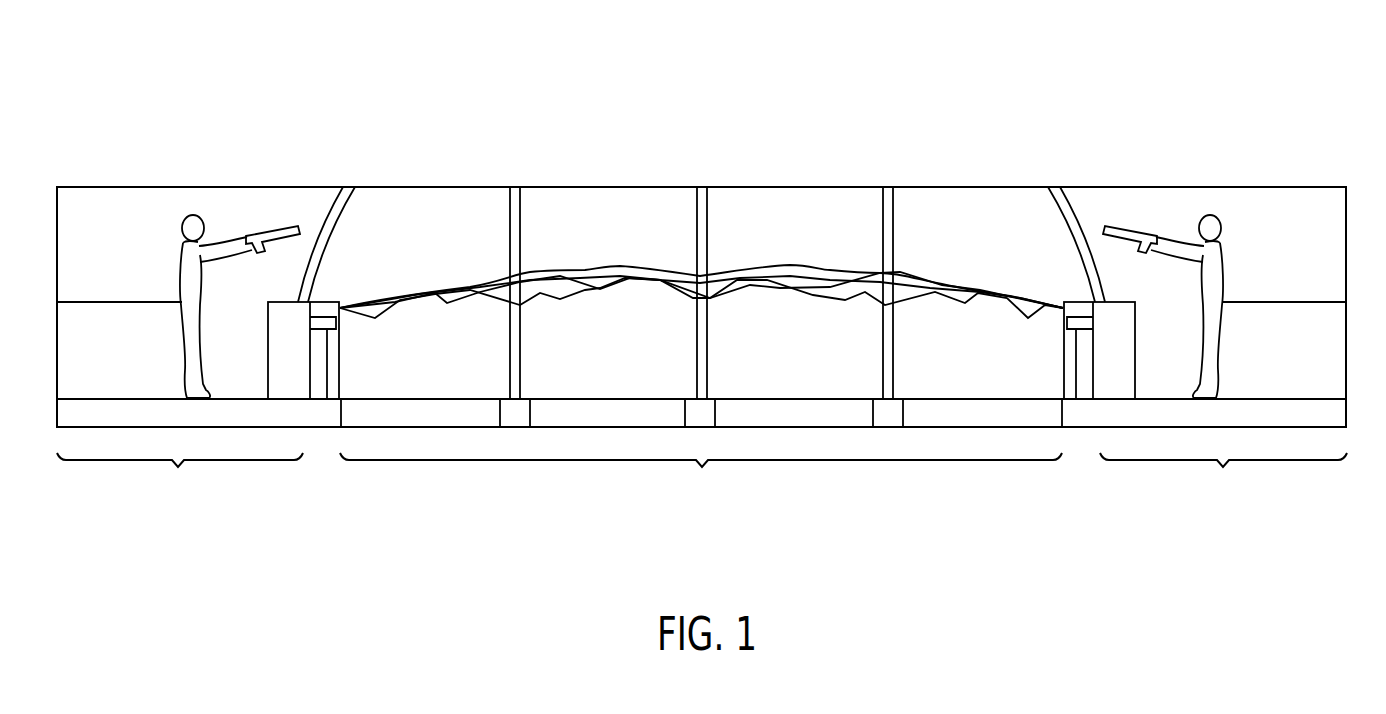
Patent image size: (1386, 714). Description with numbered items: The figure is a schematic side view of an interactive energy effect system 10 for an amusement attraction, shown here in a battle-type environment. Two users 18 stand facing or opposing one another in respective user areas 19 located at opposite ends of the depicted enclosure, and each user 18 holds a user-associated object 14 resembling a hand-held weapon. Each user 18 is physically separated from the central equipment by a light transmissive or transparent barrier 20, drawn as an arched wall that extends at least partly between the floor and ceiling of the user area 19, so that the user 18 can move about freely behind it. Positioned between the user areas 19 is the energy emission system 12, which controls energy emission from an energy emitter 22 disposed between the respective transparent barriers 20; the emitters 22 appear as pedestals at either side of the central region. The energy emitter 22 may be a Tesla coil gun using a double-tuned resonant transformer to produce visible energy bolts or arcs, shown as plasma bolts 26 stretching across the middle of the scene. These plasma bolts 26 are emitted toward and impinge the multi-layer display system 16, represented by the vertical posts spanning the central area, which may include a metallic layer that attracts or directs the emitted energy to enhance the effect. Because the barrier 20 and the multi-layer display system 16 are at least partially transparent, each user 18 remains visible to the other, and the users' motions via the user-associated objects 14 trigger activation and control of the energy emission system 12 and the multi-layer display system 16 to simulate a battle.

The interactive energy effect system 10 is at (1062, 74).
The energy emission system 12 is at (701, 478).
The user-associated object 14 is at (1132, 228).
The multi-layer display system 16 is at (703, 348).
The user 18 is at (1220, 265).
The user area 19 is at (702, 478).
The transparent barrier 20 is at (1070, 208).
The energy emitter 22 is at (1070, 330).
The plasma bolt 26 is at (932, 275).